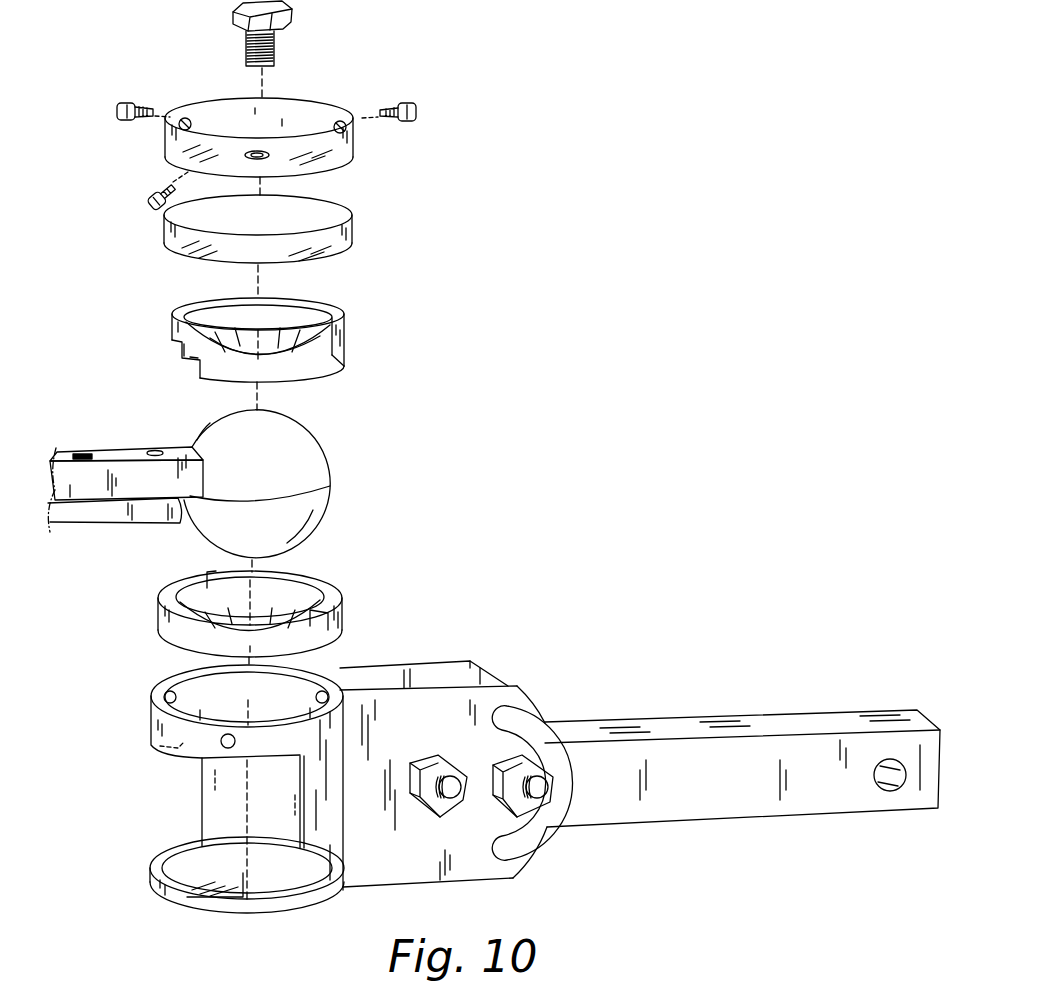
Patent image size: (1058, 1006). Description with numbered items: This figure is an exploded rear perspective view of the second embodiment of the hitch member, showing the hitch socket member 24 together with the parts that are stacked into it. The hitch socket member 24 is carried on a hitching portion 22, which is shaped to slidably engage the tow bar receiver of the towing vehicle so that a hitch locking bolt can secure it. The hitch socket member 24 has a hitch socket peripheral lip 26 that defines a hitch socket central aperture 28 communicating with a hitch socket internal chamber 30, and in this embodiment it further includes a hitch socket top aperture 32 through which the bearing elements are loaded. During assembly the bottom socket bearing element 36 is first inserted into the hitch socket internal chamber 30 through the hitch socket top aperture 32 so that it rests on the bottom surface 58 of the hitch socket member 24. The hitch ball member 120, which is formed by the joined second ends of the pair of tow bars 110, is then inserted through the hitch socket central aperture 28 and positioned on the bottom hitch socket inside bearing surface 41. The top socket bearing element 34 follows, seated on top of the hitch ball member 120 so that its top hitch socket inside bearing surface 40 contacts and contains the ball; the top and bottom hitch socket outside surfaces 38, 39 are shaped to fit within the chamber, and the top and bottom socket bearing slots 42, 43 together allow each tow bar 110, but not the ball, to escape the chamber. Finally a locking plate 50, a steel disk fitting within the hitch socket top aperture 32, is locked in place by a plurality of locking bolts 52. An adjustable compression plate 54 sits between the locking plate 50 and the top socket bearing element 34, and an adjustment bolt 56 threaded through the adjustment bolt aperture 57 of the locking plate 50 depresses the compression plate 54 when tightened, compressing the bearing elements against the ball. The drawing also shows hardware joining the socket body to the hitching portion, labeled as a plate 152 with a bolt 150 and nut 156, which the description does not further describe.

The hitching portion 22 is at (785, 748).
The hitch socket member 24 is at (358, 781).
The hitch socket peripheral lip 26 is at (220, 898).
The hitch socket central aperture 28 is at (347, 781).
The hitch socket internal chamber 30 is at (223, 790).
The hitch socket top aperture 32 is at (163, 690).
The top socket bearing element 34 is at (274, 340).
The bottom socket bearing element 36 is at (248, 607).
The top hitch socket outside surface 38 is at (330, 308).
The bottom hitch socket outside surface 39 is at (343, 634).
The top hitch socket inside bearing surface 40 is at (200, 364).
The bottom hitch socket inside bearing surface 41 is at (207, 592).
The top socket bearing slot 42 is at (325, 375).
The bottom socket bearing slot 43 is at (160, 614).
The locking plate 50 is at (348, 160).
The locking bolts 52 is at (412, 104).
The adjustable compression plate 54 is at (352, 221).
The adjustment bolt 56 is at (290, 12).
The adjustment bolt aperture 57 is at (258, 156).
The bottom surface 58 is at (223, 887).
The tow bars 110 is at (88, 472).
The hitch ball member 120 is at (327, 445).
The pivot bolt 150 is at (467, 778).
The top plate 152 is at (480, 672).
The nut 156 is at (550, 757).